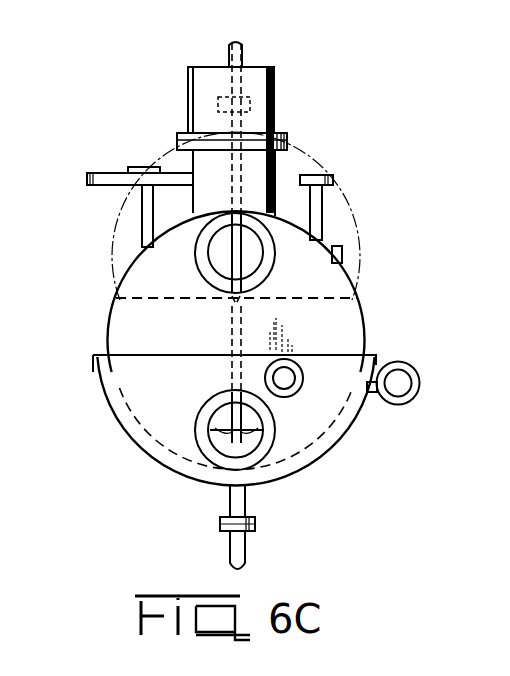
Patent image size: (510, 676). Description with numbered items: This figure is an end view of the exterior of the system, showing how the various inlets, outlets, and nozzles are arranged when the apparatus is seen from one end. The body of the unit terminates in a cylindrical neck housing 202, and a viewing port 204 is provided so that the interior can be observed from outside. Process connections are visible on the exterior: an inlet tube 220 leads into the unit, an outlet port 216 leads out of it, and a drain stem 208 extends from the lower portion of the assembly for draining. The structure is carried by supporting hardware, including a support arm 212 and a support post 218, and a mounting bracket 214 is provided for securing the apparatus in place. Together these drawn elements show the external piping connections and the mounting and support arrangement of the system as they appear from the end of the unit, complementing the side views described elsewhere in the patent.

The cylindrical neck housing 202 is at (277, 167).
The inlet tube 220 is at (242, 52).
The support arm 212 is at (121, 173).
The support post 218 is at (142, 212).
The mounting bracket 214 is at (342, 252).
The viewing port 204 is at (208, 270).
The outlet port 216 is at (297, 356).
The drain stem 208 is at (247, 497).